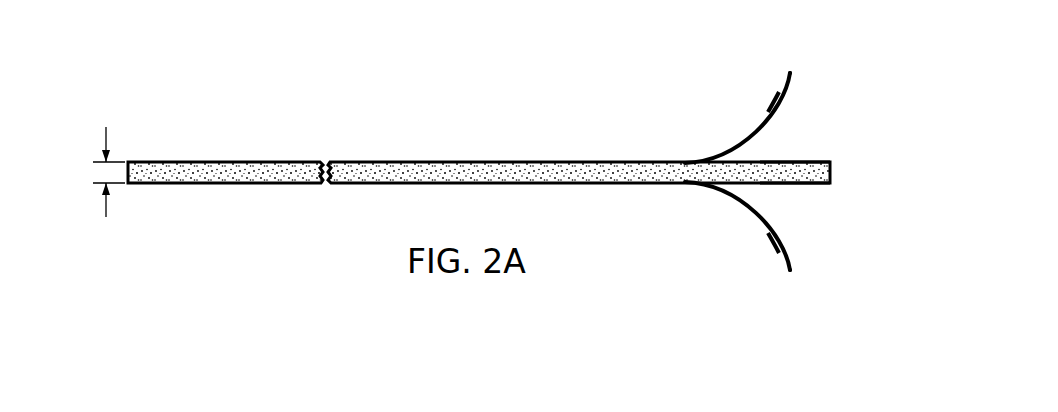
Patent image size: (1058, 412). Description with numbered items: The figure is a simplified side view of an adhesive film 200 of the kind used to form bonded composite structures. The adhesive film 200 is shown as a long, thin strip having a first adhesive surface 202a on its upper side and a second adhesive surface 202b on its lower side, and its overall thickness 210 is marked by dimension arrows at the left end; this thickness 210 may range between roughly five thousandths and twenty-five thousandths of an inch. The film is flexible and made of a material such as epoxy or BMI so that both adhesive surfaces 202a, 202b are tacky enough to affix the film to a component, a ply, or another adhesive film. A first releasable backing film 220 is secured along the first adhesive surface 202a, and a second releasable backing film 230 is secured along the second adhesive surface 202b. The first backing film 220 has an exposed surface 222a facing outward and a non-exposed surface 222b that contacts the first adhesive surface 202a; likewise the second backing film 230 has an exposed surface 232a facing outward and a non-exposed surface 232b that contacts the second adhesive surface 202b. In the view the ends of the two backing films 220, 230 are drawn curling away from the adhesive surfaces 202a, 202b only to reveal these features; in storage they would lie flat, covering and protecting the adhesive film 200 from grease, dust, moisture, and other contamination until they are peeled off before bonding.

The adhesive film 200 is at (840, 169).
The thickness 210 is at (106, 142).
The first releasable backing film 220 is at (727, 143).
The exposed surface 222a is at (784, 78).
The non-exposed surface 222b is at (781, 103).
The first adhesive surface 202a is at (796, 162).
The second adhesive surface 202b is at (804, 184).
The second releasable backing film 230 is at (727, 202).
The non-exposed surface 232b is at (784, 240).
The exposed surface 232a is at (784, 268).